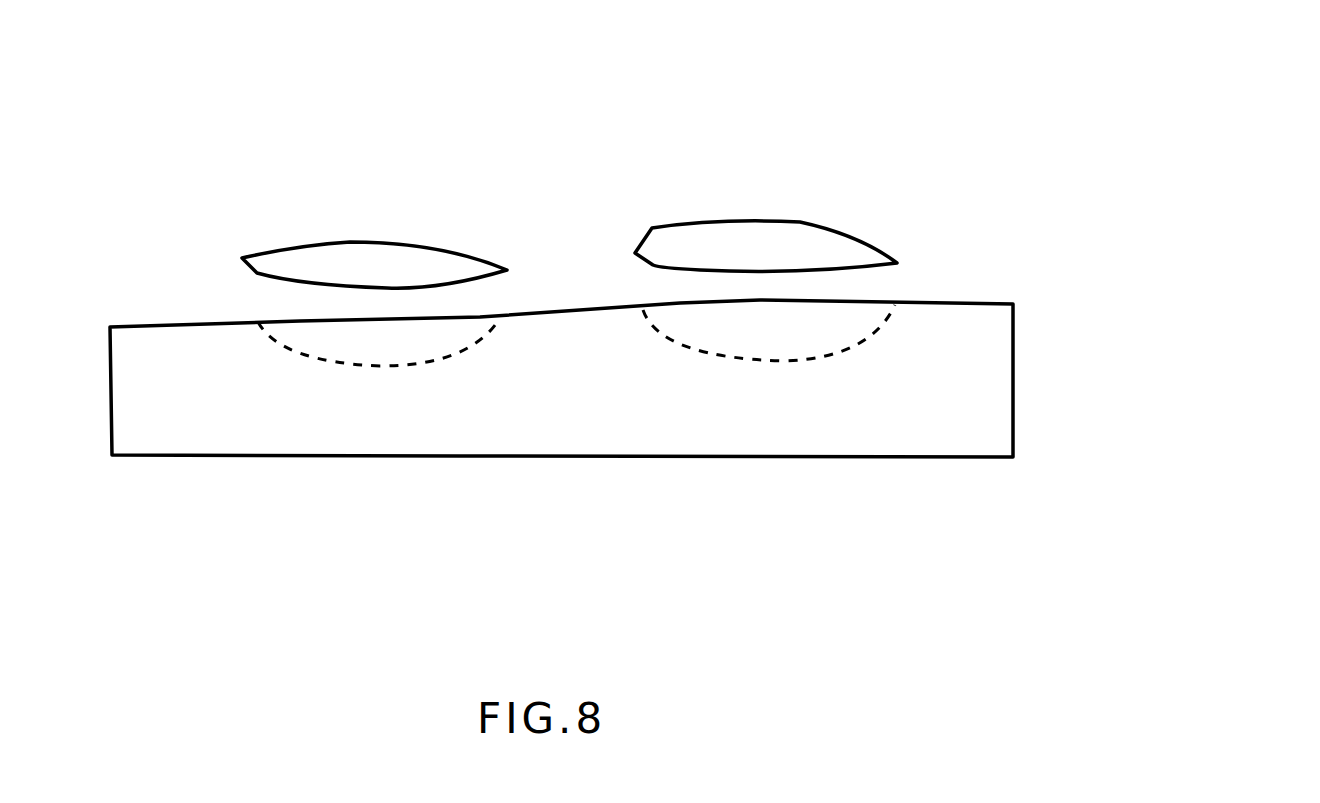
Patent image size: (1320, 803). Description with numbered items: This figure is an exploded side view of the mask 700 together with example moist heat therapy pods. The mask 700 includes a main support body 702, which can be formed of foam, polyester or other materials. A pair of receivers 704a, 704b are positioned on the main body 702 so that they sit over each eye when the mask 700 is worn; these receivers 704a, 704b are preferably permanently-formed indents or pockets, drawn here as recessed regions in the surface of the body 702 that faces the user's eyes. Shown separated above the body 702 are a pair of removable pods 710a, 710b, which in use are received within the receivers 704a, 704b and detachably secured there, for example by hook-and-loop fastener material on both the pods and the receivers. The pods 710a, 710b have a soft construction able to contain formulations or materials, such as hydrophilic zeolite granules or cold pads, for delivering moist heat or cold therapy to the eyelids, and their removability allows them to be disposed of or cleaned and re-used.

The mask 700 is at (1088, 311).
The main support body 702 is at (575, 360).
The receiver 704a is at (318, 334).
The receiver 704b is at (848, 332).
The removable pod 710a is at (380, 255).
The removable pod 710b is at (772, 233).